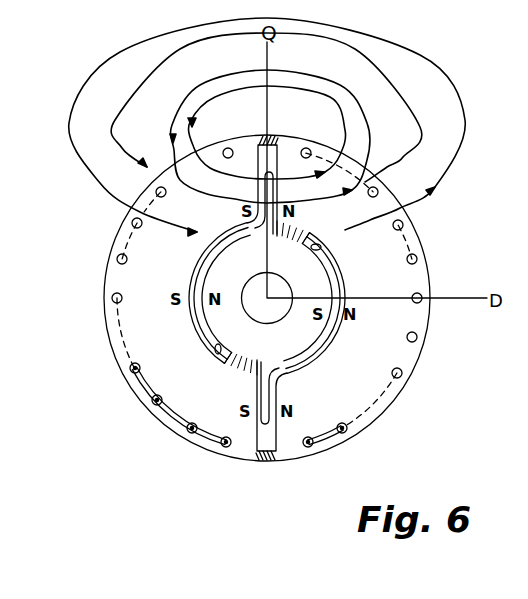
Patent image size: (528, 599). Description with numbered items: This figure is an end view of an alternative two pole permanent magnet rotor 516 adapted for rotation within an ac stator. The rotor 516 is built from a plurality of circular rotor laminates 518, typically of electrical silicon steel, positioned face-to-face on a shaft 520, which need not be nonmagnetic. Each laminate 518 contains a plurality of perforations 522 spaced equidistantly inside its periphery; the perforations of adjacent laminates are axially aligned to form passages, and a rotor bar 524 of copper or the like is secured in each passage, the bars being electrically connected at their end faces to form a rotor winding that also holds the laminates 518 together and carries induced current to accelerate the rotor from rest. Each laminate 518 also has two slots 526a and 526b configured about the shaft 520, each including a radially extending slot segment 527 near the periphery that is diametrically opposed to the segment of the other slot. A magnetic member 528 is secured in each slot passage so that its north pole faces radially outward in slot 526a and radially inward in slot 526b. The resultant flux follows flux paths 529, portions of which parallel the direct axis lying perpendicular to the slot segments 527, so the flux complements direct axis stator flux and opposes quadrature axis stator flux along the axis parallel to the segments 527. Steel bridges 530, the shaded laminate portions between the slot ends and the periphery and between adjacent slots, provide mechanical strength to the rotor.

The two pole permanent magnet rotor 516 is at (280, 501).
The circular rotor laminates 518 is at (212, 446).
The shaft 520 is at (296, 278).
The perforations 522 is at (158, 406).
The rotor bars 524 is at (187, 424).
The slot 526a is at (337, 320).
The slot 526b is at (190, 281).
The radially extending slot segment 527 is at (278, 192).
The magnetic member 528 is at (322, 247).
The flux paths 529 is at (466, 140).
The steel bridges 530 is at (272, 143).